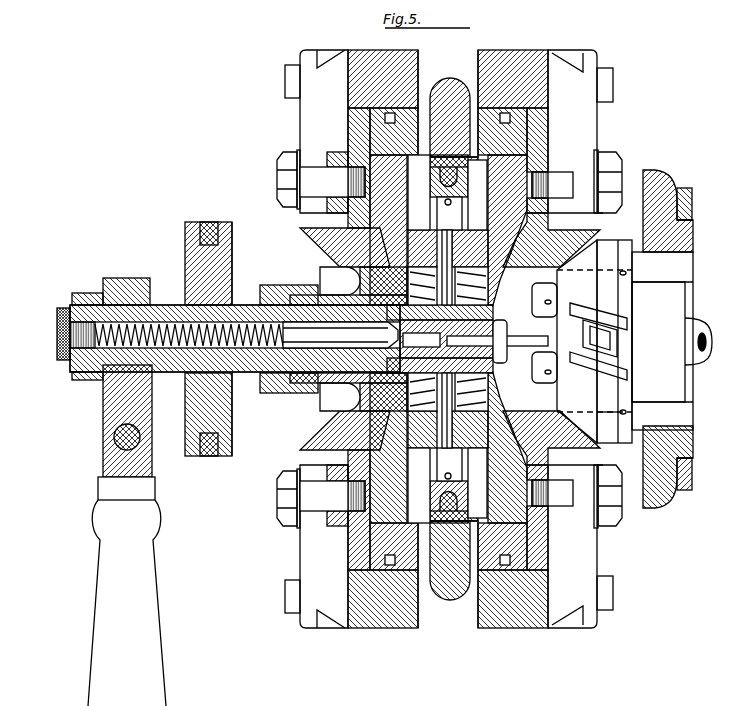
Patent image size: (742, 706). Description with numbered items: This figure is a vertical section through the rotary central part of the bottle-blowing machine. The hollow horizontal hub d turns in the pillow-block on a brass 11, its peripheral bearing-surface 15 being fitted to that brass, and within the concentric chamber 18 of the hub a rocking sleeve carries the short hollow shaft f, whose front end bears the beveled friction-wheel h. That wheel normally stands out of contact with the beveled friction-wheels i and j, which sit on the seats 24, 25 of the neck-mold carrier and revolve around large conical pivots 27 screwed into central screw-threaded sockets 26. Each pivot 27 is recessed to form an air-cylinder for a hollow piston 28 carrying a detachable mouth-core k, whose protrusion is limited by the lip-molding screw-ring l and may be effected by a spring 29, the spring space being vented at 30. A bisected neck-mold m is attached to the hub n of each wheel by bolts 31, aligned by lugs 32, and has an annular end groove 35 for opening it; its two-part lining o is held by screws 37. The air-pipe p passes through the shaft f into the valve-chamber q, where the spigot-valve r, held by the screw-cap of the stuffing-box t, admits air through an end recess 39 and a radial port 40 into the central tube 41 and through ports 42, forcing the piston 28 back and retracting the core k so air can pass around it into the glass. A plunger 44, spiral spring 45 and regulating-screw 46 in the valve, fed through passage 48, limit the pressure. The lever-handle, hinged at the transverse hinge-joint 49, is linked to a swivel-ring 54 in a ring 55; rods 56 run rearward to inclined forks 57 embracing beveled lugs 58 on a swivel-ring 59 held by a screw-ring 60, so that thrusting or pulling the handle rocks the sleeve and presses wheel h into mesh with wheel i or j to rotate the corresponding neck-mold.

The brass 11 is at (690, 207).
The peripheral bearing-surface 15 is at (693, 218).
The concentric chamber 18 is at (673, 270).
The seat 24 is at (345, 268).
The seat 25 is at (330, 412).
The central screw-threaded socket 26 is at (348, 392).
The conical pivot 27 is at (448, 339).
The hollow piston 28 is at (448, 339).
The spring 29 is at (448, 339).
The vent 30 is at (549, 304).
The bolt 31 is at (283, 184).
The lug 32 is at (288, 83).
The annular end groove 35 is at (319, 50).
The screw 37 is at (550, 339).
The end recess 39 is at (497, 341).
The radial port 40 is at (446, 339).
The central tube 41 is at (457, 436).
The port 42 is at (448, 339).
The plunger 44 is at (275, 394).
The spiral spring 45 is at (173, 350).
The regulating-screw 46 is at (57, 334).
The passage 48 is at (343, 336).
The transverse hinge-joint 49 is at (118, 437).
The swivel-ring 54 is at (213, 230).
The ring 55 is at (233, 259).
The rod 56 is at (588, 338).
The inclined fork 57 is at (598, 312).
The beveled lug 58 is at (598, 369).
The swivel-ring 59 is at (622, 412).
The screw-ring 60 is at (625, 241).
The hollow horizontal hub d is at (706, 447).
The short hollow shaft f is at (658, 342).
The beveled friction-wheel h is at (594, 341).
The friction-wheel i is at (551, 240).
The friction-wheel j is at (586, 448).
The mouth-core k is at (452, 86).
The lip-molding screw-ring l is at (352, 137).
The bisected neck-mold m is at (451, 339).
The hub n is at (359, 339).
The two-part lining o is at (383, 632).
The air-pipe p is at (710, 343).
The valve-chamber q is at (499, 341).
The spigot-valve r is at (175, 306).
The stuffing-box t is at (268, 285).